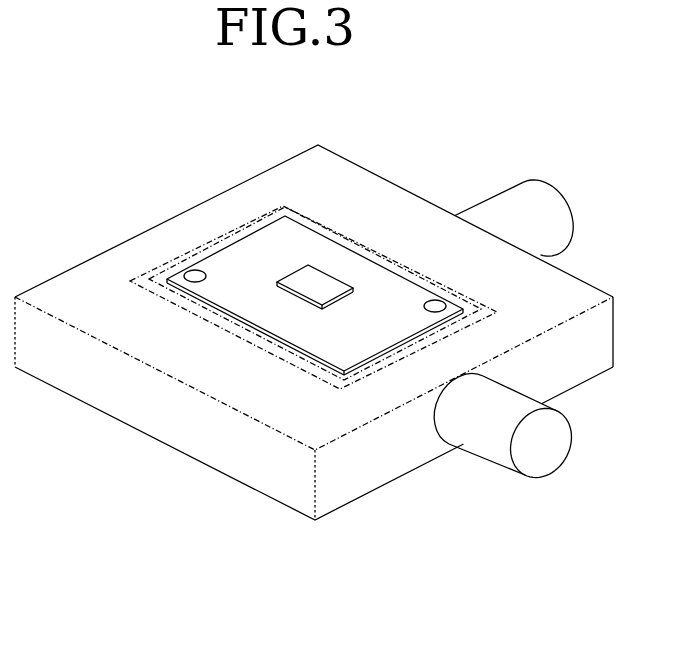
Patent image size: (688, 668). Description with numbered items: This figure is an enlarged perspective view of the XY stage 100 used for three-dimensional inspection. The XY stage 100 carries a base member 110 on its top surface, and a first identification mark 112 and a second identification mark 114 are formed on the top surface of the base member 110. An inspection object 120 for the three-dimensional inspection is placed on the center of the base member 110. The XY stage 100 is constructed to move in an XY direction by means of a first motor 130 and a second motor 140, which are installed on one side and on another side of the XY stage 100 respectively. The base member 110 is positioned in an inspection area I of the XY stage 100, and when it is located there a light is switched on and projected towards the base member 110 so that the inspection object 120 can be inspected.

The XY stage 100 is at (331, 137).
The base member 110 is at (208, 462).
The first identification mark 112 is at (189, 268).
The second identification mark 114 is at (446, 298).
The inspection object 120 is at (307, 263).
The first motor 130 is at (541, 182).
The second motor 140 is at (488, 452).
The inspection area I is at (335, 232).